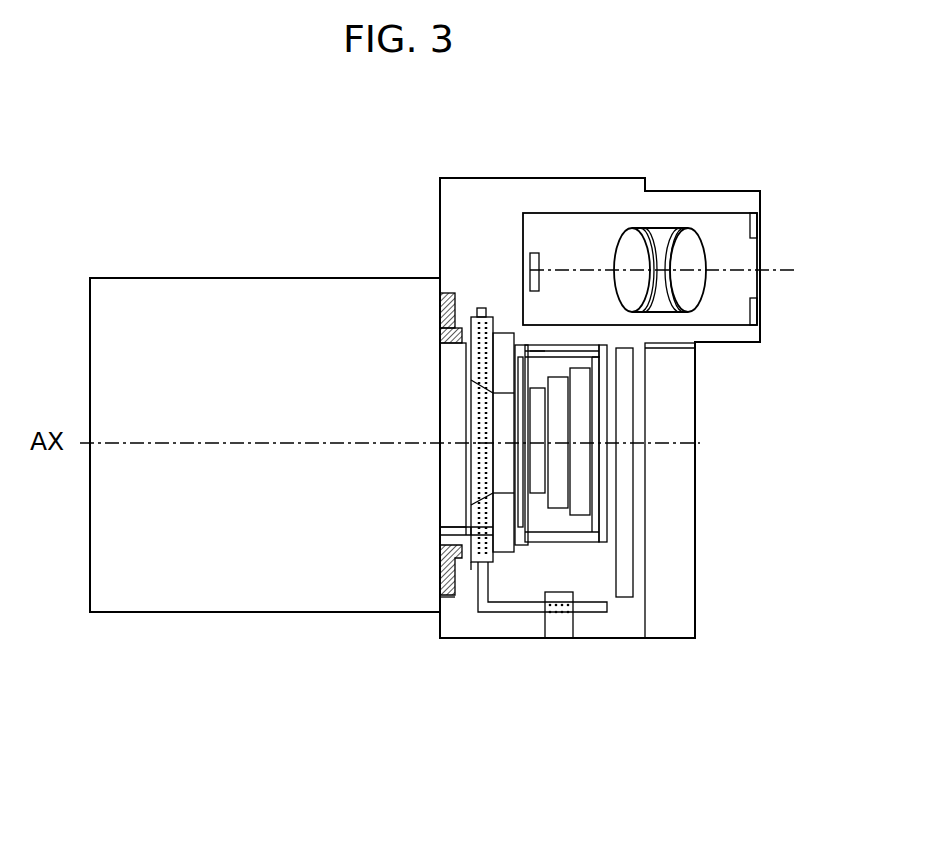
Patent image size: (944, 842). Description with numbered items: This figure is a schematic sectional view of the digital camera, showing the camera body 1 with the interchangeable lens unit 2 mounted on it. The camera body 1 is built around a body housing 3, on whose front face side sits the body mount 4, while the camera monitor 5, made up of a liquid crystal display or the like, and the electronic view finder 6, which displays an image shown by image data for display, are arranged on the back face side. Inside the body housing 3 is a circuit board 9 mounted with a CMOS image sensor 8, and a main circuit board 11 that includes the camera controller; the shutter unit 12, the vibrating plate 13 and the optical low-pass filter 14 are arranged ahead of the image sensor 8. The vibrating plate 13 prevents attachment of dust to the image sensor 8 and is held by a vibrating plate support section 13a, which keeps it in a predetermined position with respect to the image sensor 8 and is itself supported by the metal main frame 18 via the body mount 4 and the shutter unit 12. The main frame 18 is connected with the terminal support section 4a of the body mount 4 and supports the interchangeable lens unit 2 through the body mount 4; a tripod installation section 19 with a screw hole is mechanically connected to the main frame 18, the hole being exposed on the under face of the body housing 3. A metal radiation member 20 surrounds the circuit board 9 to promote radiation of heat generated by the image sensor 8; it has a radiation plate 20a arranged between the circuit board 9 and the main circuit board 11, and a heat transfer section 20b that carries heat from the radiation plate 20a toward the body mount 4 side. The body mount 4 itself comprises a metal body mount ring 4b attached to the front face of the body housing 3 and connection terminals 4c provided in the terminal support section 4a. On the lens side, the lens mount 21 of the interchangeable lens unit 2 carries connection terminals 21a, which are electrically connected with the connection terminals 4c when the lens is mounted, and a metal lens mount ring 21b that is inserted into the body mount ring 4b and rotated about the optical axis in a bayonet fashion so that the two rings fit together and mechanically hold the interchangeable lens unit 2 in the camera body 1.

The camera body 1 is at (548, 147).
The interchangeable lens unit 2 is at (179, 272).
The body housing 3 is at (487, 640).
The body mount 4 is at (447, 288).
The terminal support section 4a is at (472, 567).
The body mount ring 4b is at (445, 296).
The connection terminals 4c is at (447, 600).
The camera monitor 5 is at (675, 390).
The electronic view finder 6 is at (742, 259).
The CMOS image sensor 8 is at (558, 479).
The circuit board 9 is at (577, 460).
The main circuit board 11 is at (623, 443).
The shutter unit 12 is at (505, 552).
The vibrating plate 13 is at (523, 515).
The vibrating plate support section 13a is at (518, 537).
The optical low-pass filter 14 is at (533, 493).
The main frame 18 is at (478, 307).
The tripod installation section 19 is at (558, 623).
The radiation member 20 is at (567, 342).
The radiation plate 20a is at (600, 357).
The heat transfer section 20b is at (540, 347).
The lens mount 21 is at (448, 498).
The connection terminals 21a is at (440, 548).
The lens mount ring 21b is at (440, 332).